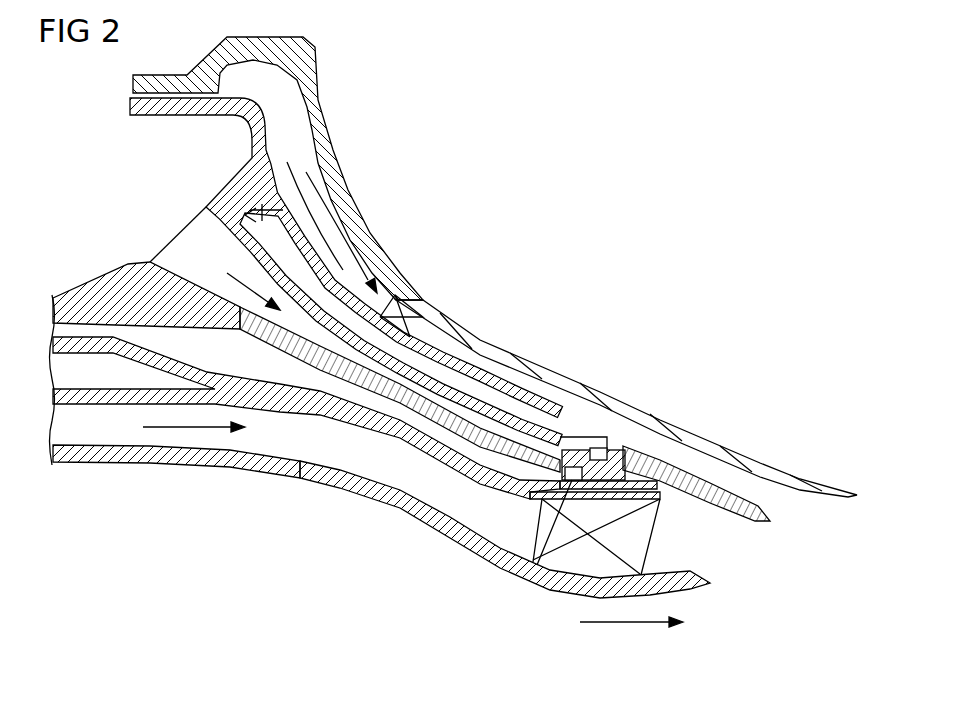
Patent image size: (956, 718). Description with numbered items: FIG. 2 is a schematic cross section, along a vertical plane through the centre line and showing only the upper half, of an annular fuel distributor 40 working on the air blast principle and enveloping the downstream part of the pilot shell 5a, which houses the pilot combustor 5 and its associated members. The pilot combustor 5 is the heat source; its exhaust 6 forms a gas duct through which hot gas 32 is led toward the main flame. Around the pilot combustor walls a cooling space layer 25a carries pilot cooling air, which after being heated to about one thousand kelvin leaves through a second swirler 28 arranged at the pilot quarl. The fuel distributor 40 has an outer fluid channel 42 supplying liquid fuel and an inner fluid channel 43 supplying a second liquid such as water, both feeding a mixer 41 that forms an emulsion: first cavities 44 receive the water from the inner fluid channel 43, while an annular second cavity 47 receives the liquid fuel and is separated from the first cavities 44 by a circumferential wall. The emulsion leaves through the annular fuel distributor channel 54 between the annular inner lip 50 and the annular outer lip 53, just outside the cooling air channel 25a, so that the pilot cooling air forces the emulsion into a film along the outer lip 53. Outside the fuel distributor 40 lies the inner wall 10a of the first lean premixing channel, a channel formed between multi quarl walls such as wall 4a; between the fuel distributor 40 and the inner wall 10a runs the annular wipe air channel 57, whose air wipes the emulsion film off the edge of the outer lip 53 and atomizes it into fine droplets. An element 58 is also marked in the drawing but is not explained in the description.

The wipe air channel 57 is at (287, 132).
The outer fluid channel 42 is at (258, 216).
The inner fluid channel 43 is at (183, 245).
The fuel distributor 40 is at (92, 266).
The strut 58 is at (430, 307).
The inner wall of the first lean premixing channel 10a is at (488, 345).
The second cavity 47 is at (598, 448).
The mixer 41 is at (622, 448).
The wall of the multi quarl 4a is at (748, 462).
The outer lip 53 is at (753, 510).
The annular fuel distributor channel 54 is at (690, 517).
The inner lip 50 is at (660, 500).
The pilot combustor 5 is at (87, 462).
The cooling space layer 25a is at (177, 438).
The pilot shell 5a is at (303, 397).
The second swirler 28 is at (533, 535).
The first cavities 44 is at (540, 565).
The hot gas 32 is at (617, 623).
The exhaust / gas duct 6 is at (472, 635).